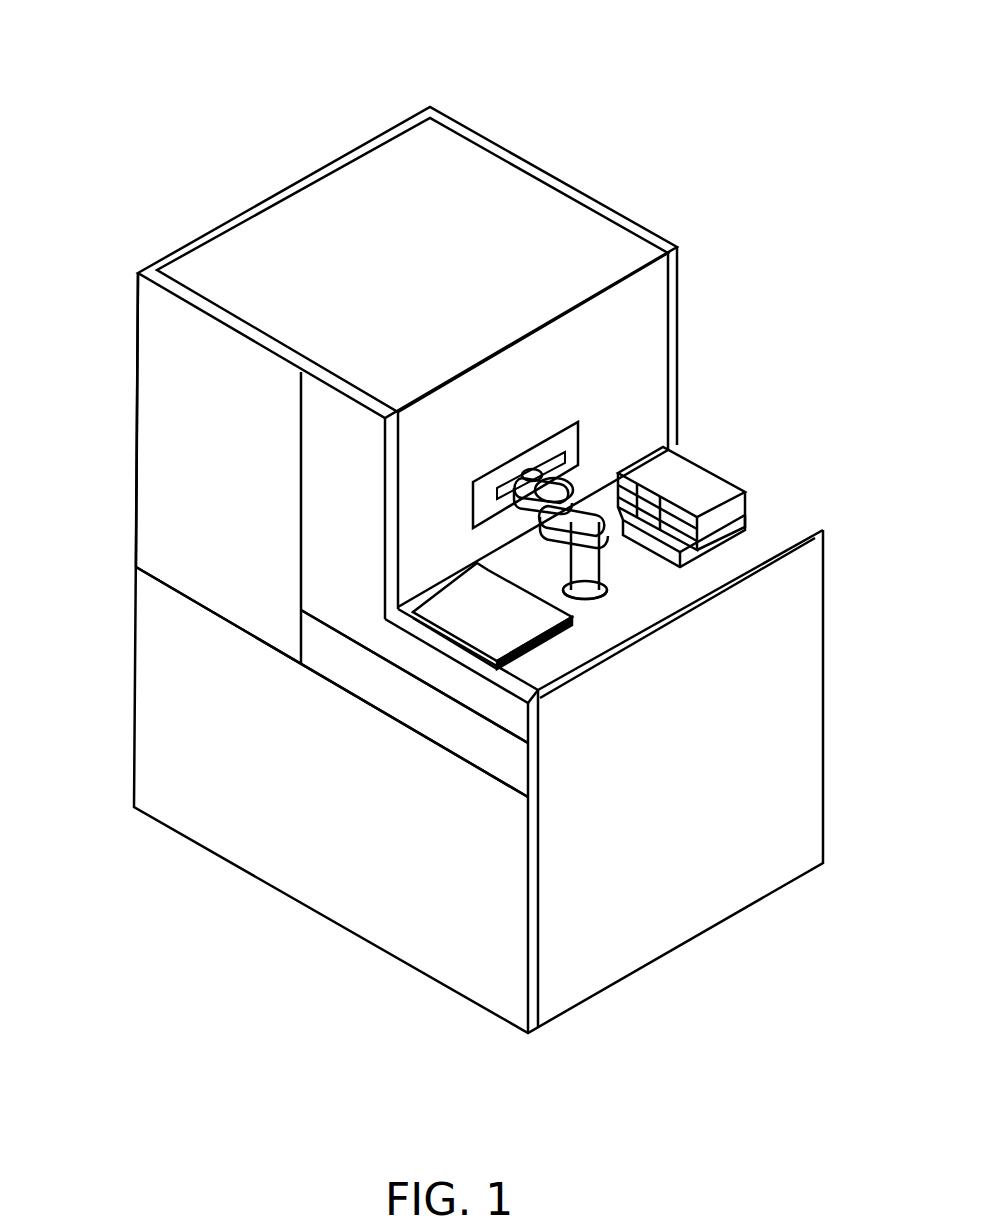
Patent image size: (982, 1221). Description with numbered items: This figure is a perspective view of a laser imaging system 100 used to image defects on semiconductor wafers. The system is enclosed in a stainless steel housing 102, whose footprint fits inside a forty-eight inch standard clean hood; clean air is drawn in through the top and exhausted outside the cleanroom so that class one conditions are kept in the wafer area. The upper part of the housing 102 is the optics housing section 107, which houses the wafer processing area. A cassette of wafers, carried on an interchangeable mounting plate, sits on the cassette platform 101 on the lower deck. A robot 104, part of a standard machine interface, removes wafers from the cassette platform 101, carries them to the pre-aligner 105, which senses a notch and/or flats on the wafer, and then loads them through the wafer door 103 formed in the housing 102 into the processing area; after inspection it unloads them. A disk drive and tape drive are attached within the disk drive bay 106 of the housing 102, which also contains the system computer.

The laser imaging system 100 is at (316, 108).
The cassette platform 101 is at (530, 622).
The housing 102 is at (572, 185).
The wafer door 103 is at (580, 442).
The robot 104 is at (582, 520).
The pre-aligner 105 is at (720, 487).
The disk drive bay 106 is at (470, 735).
The optics housing section 107 is at (124, 273).